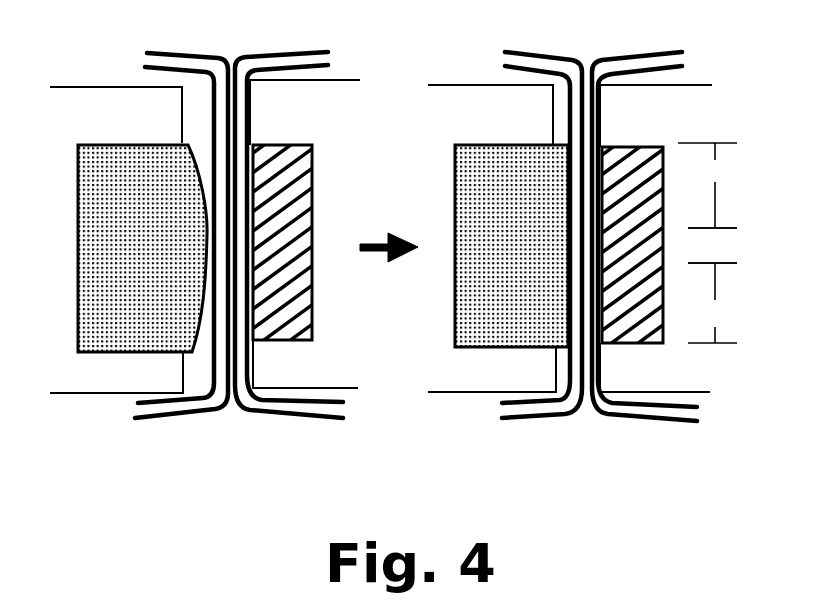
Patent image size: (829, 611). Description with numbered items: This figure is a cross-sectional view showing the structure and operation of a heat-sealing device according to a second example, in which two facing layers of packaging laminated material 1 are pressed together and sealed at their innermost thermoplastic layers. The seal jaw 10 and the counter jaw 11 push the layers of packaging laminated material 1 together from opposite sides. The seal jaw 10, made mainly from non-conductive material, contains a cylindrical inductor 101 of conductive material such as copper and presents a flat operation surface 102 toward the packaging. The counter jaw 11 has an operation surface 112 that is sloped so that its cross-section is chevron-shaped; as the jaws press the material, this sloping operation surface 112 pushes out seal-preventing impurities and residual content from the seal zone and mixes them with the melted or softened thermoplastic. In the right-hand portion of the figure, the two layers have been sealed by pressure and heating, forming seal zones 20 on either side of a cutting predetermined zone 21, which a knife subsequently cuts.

The packaging laminated material 1 is at (150, 55).
The seal jaw 10 is at (349, 398).
The cylindrical inductor 101 is at (280, 340).
The flat operation surface 102 is at (273, 147).
The counter jaw 11 is at (126, 396).
The operation surface 112 is at (203, 195).
The seal zone 20 is at (707, 243).
The cutting predetermined zone 21 is at (712, 245).